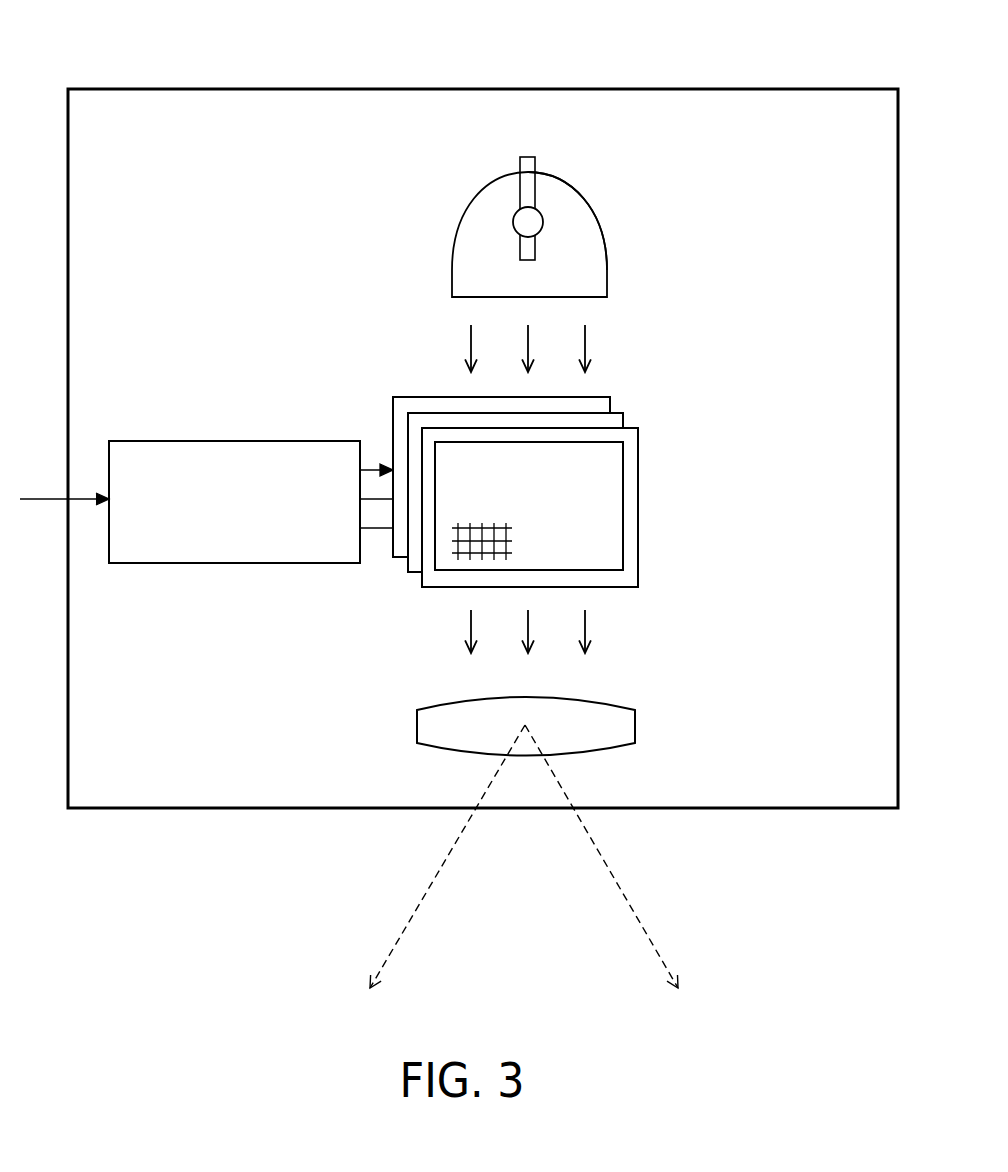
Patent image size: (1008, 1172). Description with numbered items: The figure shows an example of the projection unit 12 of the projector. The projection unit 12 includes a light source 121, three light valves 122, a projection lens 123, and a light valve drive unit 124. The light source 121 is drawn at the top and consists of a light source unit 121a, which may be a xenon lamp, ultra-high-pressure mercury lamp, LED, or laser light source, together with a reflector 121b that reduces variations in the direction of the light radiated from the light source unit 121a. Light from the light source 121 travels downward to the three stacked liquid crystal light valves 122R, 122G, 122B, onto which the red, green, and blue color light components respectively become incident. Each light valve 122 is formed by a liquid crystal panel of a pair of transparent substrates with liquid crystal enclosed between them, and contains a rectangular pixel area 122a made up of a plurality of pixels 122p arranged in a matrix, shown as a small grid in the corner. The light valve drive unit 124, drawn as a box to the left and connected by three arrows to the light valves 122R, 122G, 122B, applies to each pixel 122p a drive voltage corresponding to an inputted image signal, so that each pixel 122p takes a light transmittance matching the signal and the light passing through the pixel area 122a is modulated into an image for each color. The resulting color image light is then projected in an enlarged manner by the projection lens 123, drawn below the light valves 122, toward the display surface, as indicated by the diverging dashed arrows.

The projection unit 12 is at (124, 88).
The light source 121 is at (495, 212).
The light source unit 121a is at (522, 220).
The reflector 121b is at (585, 207).
The light valve 122 is at (607, 500).
The blue liquid crystal light valve 122B is at (597, 405).
The green liquid crystal light valve 122G is at (607, 422).
The red liquid crystal light valve 122R is at (630, 482).
The pixel area 122a is at (600, 533).
The pixel 122p is at (462, 545).
The projection lens 123 is at (432, 725).
The light valve drive unit 124 is at (280, 441).